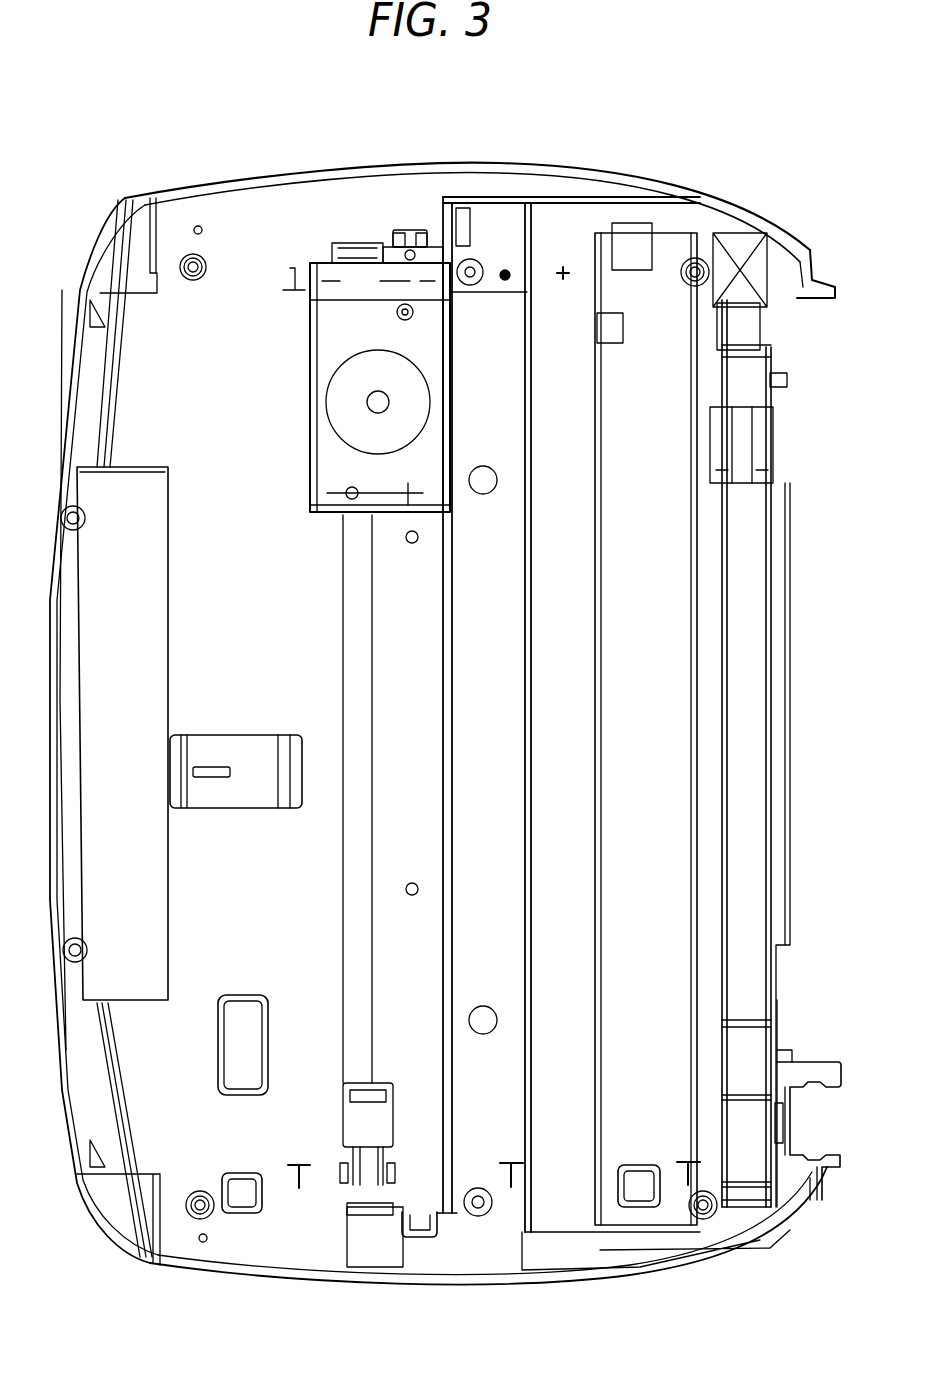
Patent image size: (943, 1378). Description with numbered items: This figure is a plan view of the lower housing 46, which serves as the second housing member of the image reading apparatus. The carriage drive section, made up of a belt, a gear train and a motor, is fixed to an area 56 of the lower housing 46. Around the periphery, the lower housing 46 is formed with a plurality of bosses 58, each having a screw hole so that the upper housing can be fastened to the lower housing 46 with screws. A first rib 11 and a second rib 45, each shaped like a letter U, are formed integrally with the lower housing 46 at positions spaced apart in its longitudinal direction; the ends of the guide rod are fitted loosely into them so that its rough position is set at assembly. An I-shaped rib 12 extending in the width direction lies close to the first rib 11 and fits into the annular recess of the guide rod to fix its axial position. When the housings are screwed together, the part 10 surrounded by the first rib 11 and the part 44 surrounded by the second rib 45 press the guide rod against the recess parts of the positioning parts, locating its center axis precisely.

The part surrounded by the first rib 10 is at (410, 231).
The first rib 11 is at (427, 231).
The rib 12 is at (397, 229).
The part surrounded by the second rib 44 is at (422, 1228).
The second rib 45 is at (428, 1215).
The lower housing 46 is at (697, 189).
The area 56 is at (306, 366).
The bosses 58 is at (184, 256).